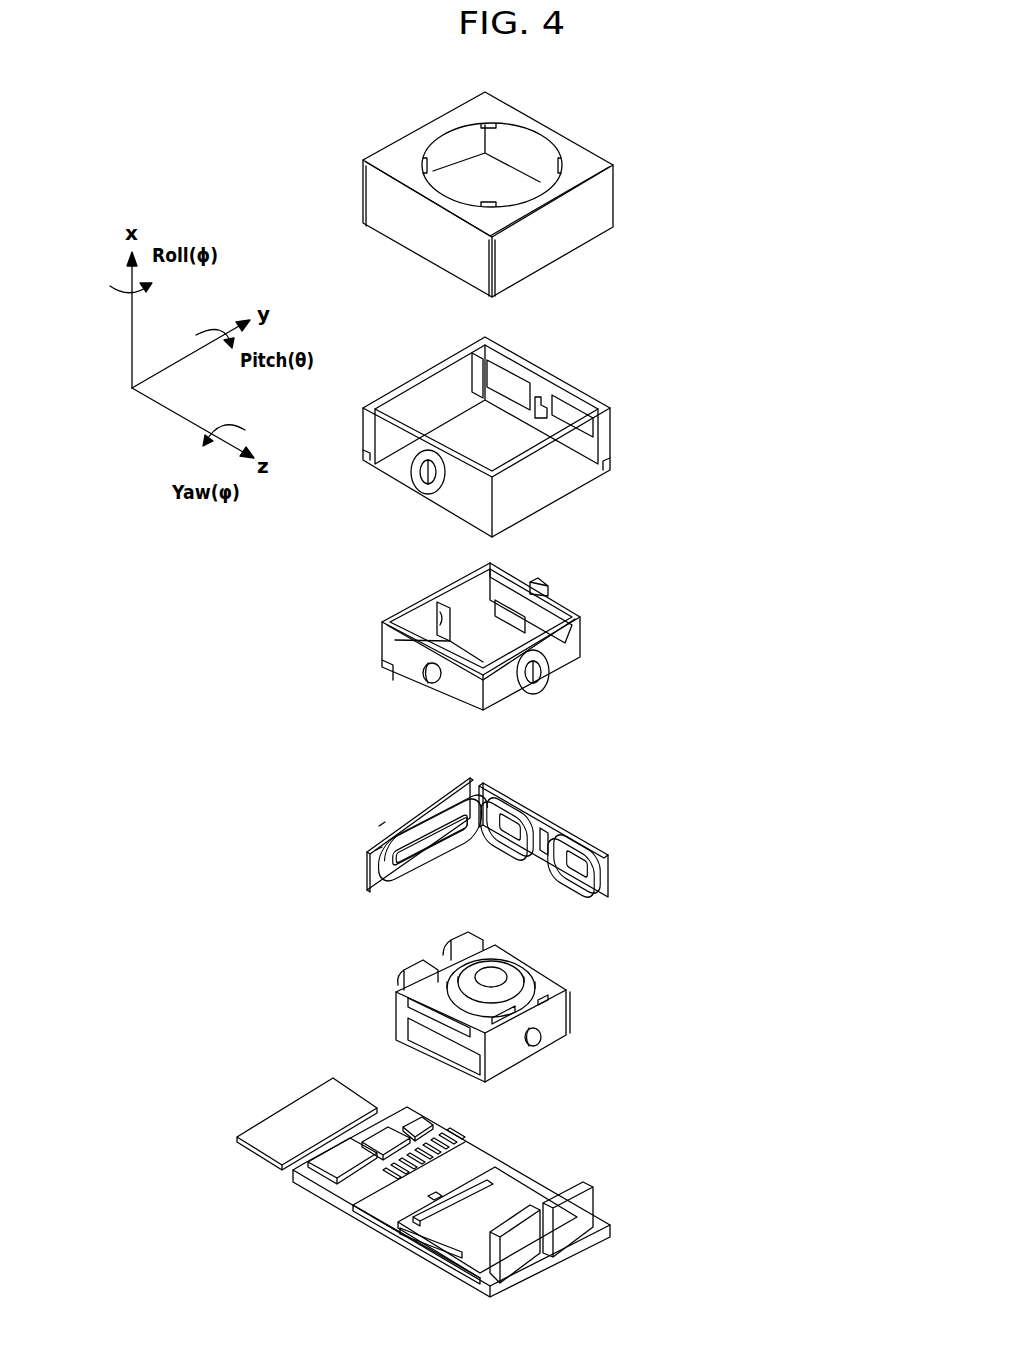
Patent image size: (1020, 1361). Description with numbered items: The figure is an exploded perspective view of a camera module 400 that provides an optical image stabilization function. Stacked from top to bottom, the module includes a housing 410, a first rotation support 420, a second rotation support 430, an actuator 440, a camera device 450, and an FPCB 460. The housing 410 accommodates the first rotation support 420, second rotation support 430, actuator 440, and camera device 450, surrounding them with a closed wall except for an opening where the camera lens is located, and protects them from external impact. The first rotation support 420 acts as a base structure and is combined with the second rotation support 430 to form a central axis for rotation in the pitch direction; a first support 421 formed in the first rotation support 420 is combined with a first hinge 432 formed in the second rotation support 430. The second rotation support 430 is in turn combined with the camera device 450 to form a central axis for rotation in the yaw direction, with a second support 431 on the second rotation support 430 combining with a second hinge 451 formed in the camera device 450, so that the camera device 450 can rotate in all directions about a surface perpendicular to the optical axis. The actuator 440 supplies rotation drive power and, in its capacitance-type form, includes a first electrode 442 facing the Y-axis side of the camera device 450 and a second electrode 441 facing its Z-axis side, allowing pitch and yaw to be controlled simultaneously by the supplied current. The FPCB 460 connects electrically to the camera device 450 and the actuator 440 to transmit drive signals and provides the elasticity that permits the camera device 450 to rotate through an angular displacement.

The camera module 400 is at (624, 104).
The housing 410 is at (603, 207).
The first rotation support 420 is at (605, 433).
The first support 421 is at (420, 471).
The second rotation support 430 is at (578, 625).
The second support 431 is at (545, 663).
The first hinge 432 is at (422, 672).
The actuator 440 is at (610, 878).
The second electrode 441 is at (527, 818).
The first electrode 442 is at (380, 840).
The camera device 450 is at (568, 1010).
The second hinge 451 is at (540, 1037).
The FPCB 460 is at (603, 1222).